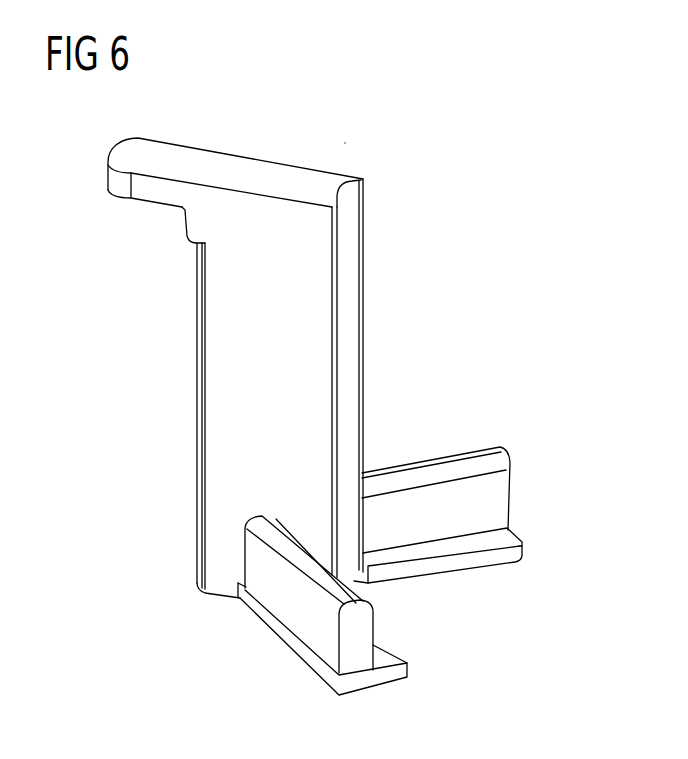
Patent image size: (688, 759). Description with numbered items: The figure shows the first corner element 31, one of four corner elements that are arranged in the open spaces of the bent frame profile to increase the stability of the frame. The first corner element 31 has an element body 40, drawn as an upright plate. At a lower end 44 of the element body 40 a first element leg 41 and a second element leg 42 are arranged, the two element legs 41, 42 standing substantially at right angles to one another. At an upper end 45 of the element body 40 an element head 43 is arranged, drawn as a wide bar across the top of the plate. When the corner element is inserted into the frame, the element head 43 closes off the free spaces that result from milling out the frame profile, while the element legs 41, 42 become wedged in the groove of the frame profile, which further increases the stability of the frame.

The first corner element 31 is at (483, 230).
The element body 40 is at (352, 343).
The first element leg 41 is at (468, 468).
The second element leg 42 is at (310, 632).
The element head 43 is at (223, 158).
The lower end 44 is at (193, 603).
The upper end 45 is at (335, 147).